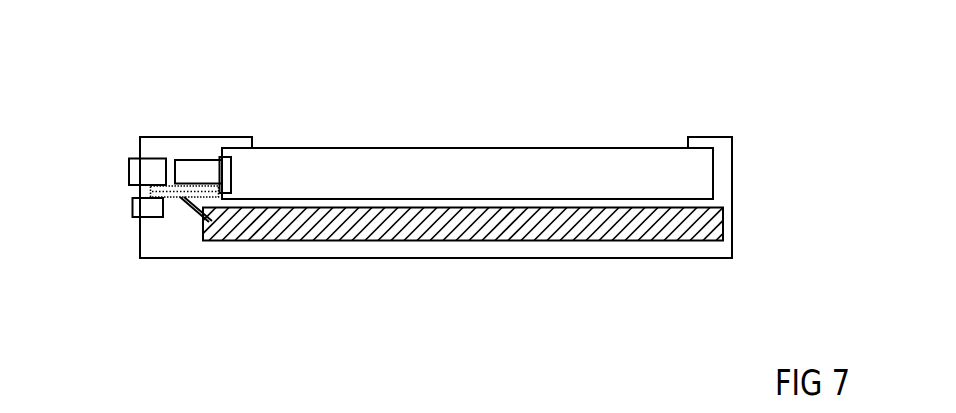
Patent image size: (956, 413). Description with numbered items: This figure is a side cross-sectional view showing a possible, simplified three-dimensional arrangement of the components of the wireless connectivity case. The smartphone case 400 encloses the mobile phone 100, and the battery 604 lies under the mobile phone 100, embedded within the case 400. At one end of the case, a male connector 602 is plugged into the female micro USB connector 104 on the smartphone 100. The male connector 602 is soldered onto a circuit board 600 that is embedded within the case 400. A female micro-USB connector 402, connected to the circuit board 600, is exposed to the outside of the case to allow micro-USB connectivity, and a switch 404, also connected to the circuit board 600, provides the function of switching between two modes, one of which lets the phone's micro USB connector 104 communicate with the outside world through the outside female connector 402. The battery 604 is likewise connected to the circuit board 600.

The smartphone 100 is at (483, 186).
The female micro USB connector 104 is at (232, 170).
The smartphone case 400 is at (732, 198).
The female micro-USB connector 402 is at (128, 175).
The switch 404 is at (132, 208).
The circuit board 600 is at (171, 198).
The male connector 602 is at (194, 160).
The battery 604 is at (475, 238).